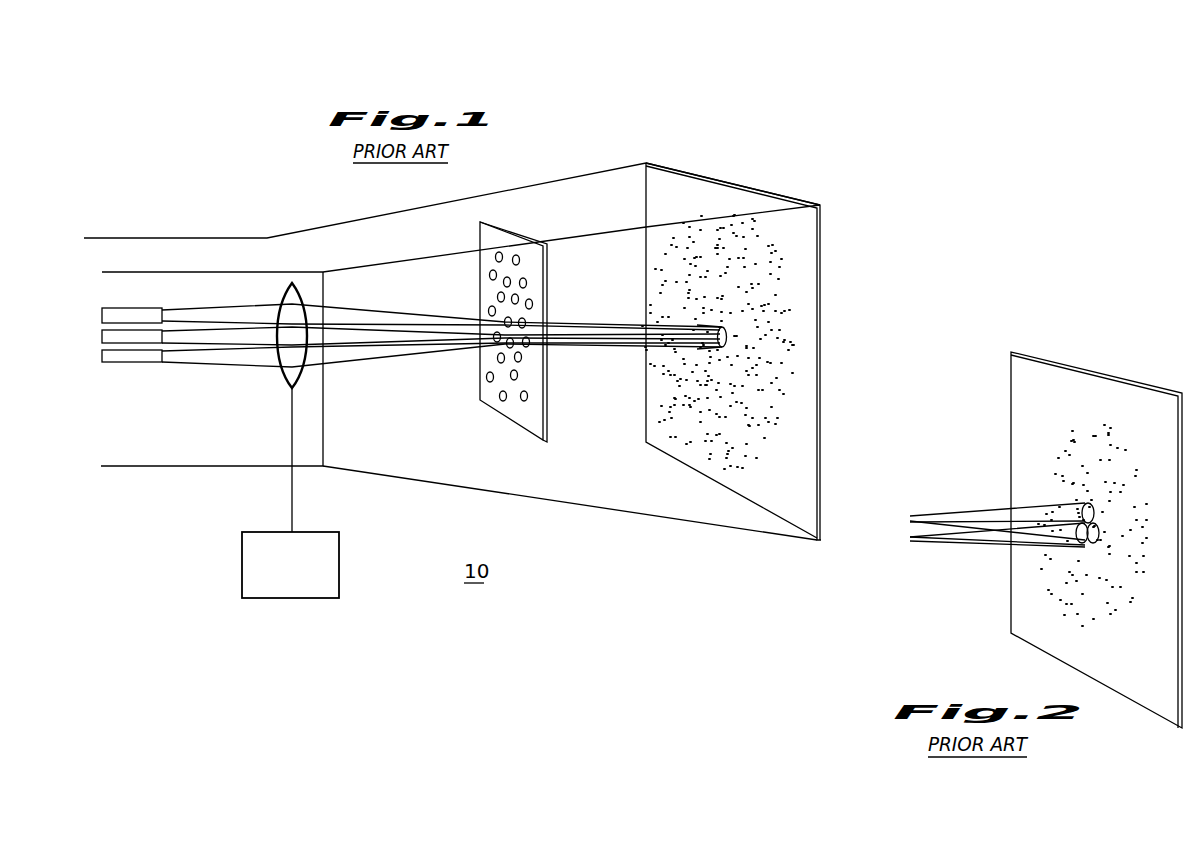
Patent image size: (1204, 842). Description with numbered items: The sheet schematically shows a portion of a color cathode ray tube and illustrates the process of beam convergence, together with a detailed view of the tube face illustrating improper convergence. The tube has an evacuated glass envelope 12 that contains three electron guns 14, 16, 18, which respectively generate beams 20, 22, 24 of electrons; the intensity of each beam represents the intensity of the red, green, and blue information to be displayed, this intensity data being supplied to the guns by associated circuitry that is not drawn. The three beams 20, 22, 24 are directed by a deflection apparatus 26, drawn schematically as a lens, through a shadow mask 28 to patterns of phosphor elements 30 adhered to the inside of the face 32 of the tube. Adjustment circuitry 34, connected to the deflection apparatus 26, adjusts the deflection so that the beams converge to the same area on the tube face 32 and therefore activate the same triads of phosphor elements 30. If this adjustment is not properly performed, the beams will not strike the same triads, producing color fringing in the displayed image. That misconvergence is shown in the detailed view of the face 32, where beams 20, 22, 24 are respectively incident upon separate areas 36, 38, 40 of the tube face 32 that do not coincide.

In FIG. 1, the evacuated glass envelope 12 is at (520, 186).
In FIG. 1, the electron gun 14 is at (120, 309).
In FIG. 1, the electron gun 16 is at (107, 337).
In FIG. 1, the electron gun 18 is at (128, 359).
In FIG. 1, the electron beam 20 is at (197, 313).
In FIG. 2, the electron beam 20 is at (922, 515).
In FIG. 1, the electron beam 22 is at (207, 335).
In FIG. 2, the electron beam 22 is at (917, 527).
In FIG. 1, the electron beam 24 is at (223, 358).
In FIG. 2, the electron beam 24 is at (927, 541).
In FIG. 1, the deflection apparatus 26 is at (283, 377).
In FIG. 1, the shadow mask 28 is at (545, 288).
In FIG. 1, the phosphor elements 30 is at (728, 333).
In FIG. 1, the tube face 32 is at (730, 473).
In FIG. 2, the tube face 32 is at (1043, 392).
In FIG. 1, the adjustment circuitry 34 is at (278, 599).
In FIG. 2, the area of tube face 36 is at (1090, 505).
In FIG. 2, the area of tube face 38 is at (1077, 540).
In FIG. 2, the area of tube face 40 is at (1088, 548).